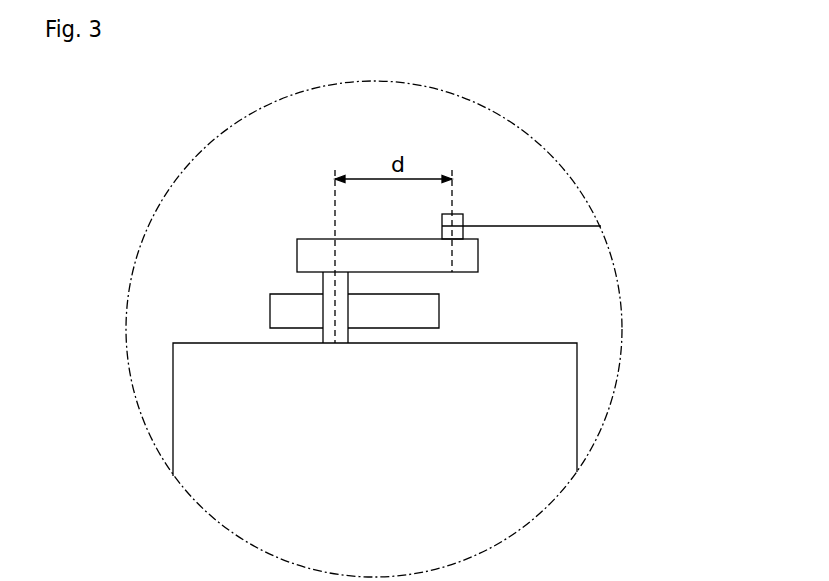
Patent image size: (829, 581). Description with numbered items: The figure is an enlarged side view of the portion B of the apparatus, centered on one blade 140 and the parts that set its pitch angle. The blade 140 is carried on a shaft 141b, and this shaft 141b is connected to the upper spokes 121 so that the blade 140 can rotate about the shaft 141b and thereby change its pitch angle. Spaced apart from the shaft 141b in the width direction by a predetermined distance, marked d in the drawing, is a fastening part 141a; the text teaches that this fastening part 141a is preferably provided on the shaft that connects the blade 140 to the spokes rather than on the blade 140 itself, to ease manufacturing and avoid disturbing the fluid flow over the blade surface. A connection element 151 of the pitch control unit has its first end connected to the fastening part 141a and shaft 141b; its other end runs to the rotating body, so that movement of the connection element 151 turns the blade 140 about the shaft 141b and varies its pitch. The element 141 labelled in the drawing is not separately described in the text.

The portion B is at (522, 130).
The blade 140 is at (577, 374).
The bar member 141 is at (317, 239).
The fastening part 141a is at (460, 214).
The shaft 141b is at (323, 293).
The connection element 151 is at (532, 226).
The upper spokes 121 is at (270, 310).